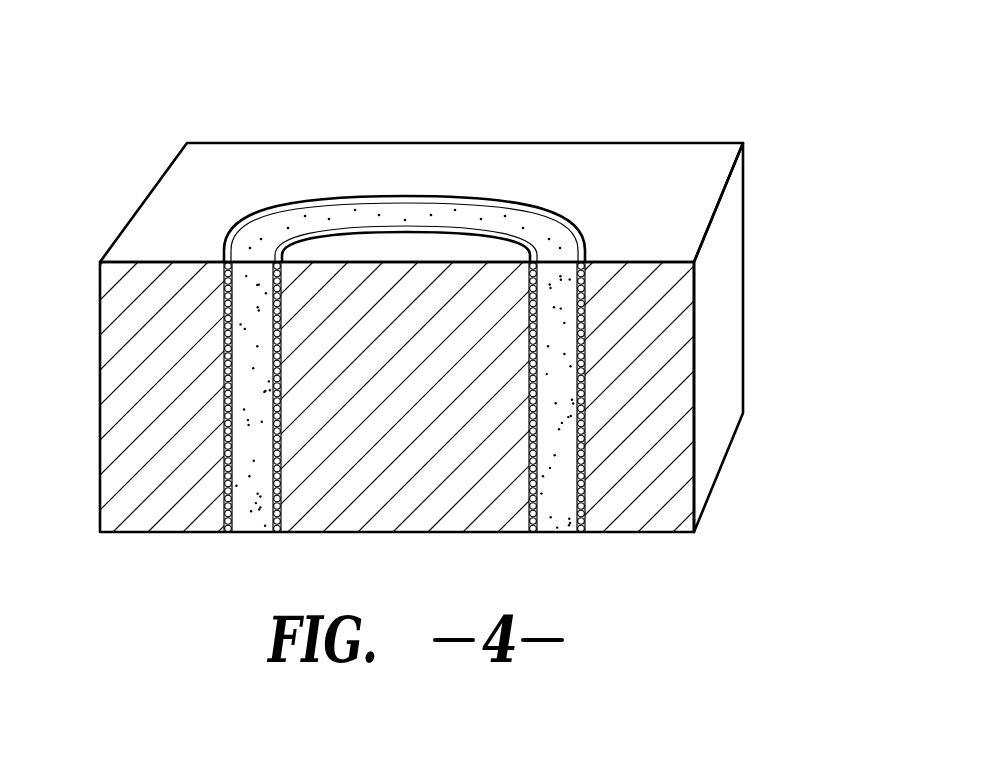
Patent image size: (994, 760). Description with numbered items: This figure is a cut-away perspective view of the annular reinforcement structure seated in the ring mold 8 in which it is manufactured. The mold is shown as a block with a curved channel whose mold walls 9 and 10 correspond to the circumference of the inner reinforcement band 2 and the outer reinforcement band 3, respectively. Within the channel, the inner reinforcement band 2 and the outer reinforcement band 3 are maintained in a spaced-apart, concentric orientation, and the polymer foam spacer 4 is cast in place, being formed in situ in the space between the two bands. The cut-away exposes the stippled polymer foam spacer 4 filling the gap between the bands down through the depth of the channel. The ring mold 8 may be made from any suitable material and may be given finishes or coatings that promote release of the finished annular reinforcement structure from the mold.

The inner reinforcement band 2 is at (277, 305).
The outer reinforcement band 3 is at (227, 377).
The polymer foam spacer 4 is at (260, 435).
The ring mold 8 is at (440, 266).
The mold wall 9 is at (537, 335).
The mold wall 10 is at (583, 422).